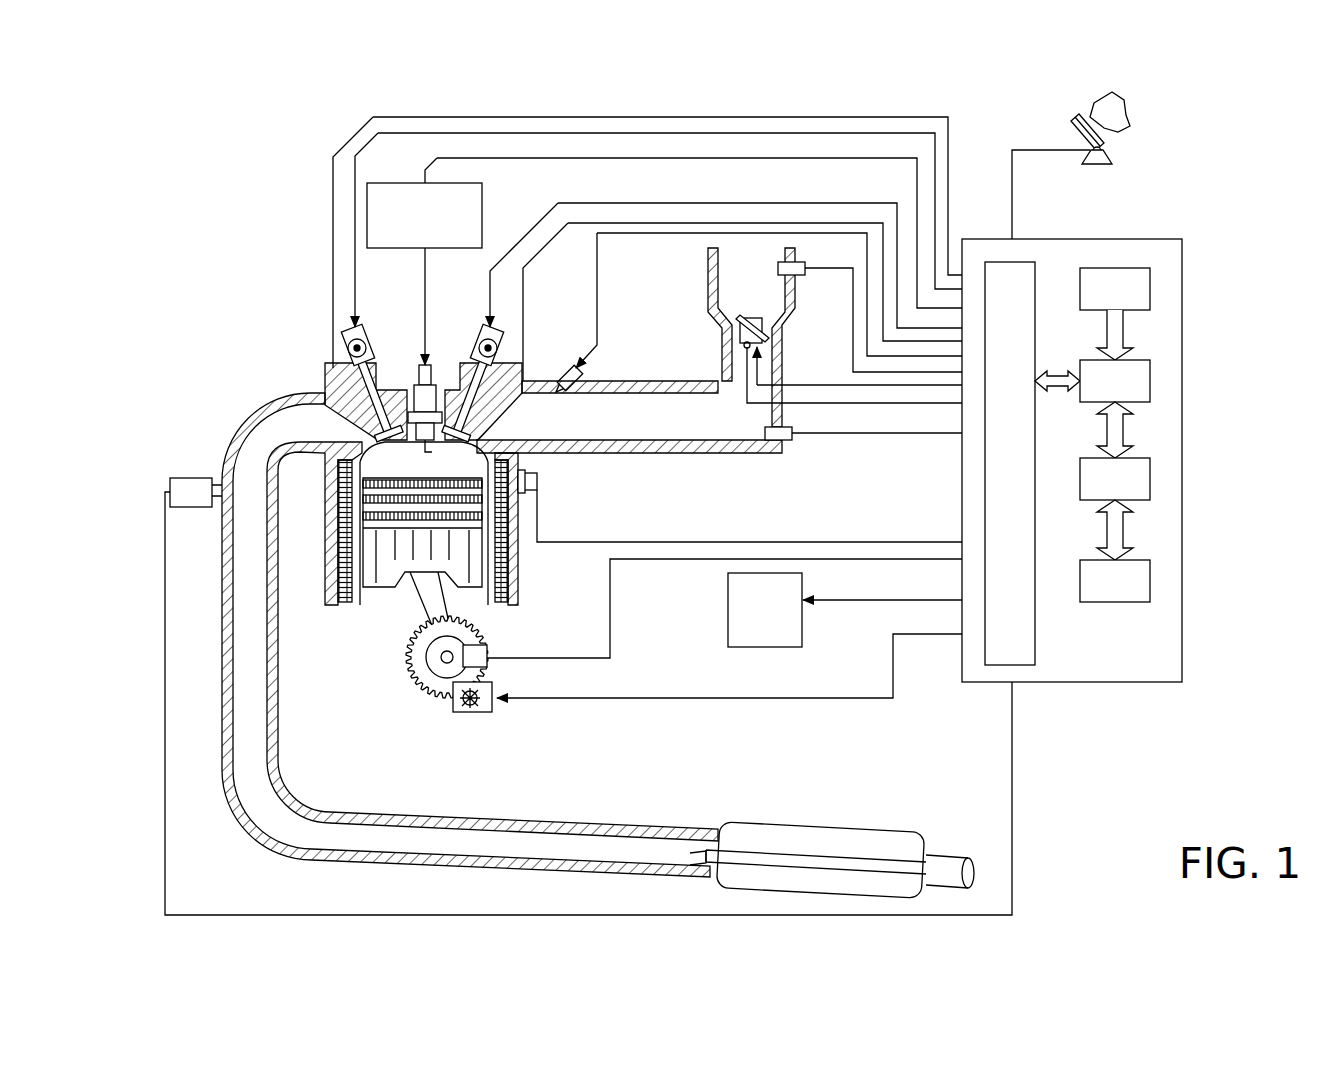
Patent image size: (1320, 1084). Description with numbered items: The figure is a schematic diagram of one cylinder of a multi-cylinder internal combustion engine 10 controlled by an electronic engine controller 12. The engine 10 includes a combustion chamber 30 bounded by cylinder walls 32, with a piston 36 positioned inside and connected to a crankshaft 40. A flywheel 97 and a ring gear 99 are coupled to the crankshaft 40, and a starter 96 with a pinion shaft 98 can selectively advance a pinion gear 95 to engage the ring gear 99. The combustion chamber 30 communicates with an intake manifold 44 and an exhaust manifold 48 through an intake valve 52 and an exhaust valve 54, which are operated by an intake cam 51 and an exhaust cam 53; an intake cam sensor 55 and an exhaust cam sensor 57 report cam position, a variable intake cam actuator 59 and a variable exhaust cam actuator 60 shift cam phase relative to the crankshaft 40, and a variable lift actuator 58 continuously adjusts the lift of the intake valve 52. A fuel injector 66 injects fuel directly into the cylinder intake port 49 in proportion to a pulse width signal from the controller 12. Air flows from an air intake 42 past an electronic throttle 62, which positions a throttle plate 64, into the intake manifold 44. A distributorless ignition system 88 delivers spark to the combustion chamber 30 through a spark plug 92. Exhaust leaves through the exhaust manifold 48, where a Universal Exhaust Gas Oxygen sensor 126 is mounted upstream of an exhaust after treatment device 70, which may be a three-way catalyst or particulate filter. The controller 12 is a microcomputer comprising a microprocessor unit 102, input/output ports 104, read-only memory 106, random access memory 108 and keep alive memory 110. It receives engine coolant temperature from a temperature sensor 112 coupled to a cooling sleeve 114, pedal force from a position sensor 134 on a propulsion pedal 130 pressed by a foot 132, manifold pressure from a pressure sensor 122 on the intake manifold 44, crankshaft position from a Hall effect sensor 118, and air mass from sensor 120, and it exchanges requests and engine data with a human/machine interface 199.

The internal combustion engine 10 is at (262, 318).
The electronic engine controller 12 is at (1116, 444).
The combustion chamber 30 is at (423, 462).
The cylinder walls 32 is at (370, 600).
The piston 36 is at (408, 602).
The crankshaft 40 is at (422, 686).
The air intake 42 is at (736, 297).
The intake manifold 44 is at (674, 432).
The exhaust manifold 48 is at (281, 439).
The cylinder intake port 49 is at (510, 430).
The intake cam 51 is at (472, 333).
The intake valve 52 is at (493, 438).
The exhaust cam 53 is at (362, 331).
The exhaust valve 54 is at (338, 402).
The intake cam sensor 55 is at (500, 358).
The exhaust cam sensor 57 is at (345, 352).
The variable lift actuator 58 is at (487, 332).
The variable intake cam actuator 59 is at (472, 350).
The variable exhaust cam actuator 60 is at (372, 348).
The electronic throttle 62 is at (765, 323).
The throttle plate 64 is at (733, 327).
The fuel injector 66 is at (563, 372).
The exhaust after treatment device 70 is at (757, 822).
The distributorless ignition system 88 is at (380, 183).
The spark plug 92 is at (418, 392).
The pinion gear 95 is at (477, 712).
The starter 96 is at (455, 712).
The flywheel 97 is at (418, 670).
The pinion shaft 98 is at (465, 712).
The ring gear 99 is at (432, 700).
The microprocessor unit 102 is at (1152, 380).
The input/output ports 104 is at (1035, 268).
The read-only memory 106 is at (1152, 286).
The random access memory 108 is at (1152, 478).
The keep alive memory 110 is at (1152, 580).
The temperature sensor 112 is at (535, 490).
The cooling sleeve 114 is at (517, 563).
The Hall effect sensor 118 is at (488, 642).
The air mass sensor 120 is at (800, 265).
The pressure sensor 122 is at (795, 443).
The Universal Exhaust Gas Oxygen sensor 126 is at (170, 480).
The propulsion pedal 130 is at (1073, 122).
The foot 132 is at (1125, 112).
The position sensor 134 is at (1108, 153).
The human/machine interface 199 is at (856, 610).